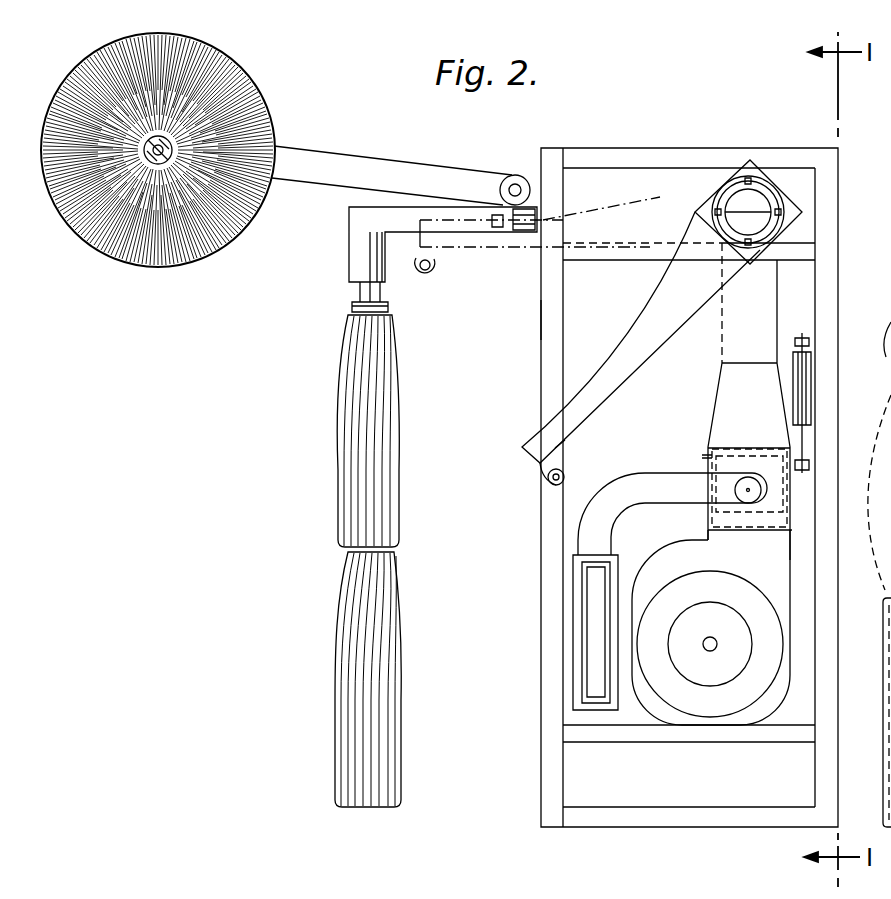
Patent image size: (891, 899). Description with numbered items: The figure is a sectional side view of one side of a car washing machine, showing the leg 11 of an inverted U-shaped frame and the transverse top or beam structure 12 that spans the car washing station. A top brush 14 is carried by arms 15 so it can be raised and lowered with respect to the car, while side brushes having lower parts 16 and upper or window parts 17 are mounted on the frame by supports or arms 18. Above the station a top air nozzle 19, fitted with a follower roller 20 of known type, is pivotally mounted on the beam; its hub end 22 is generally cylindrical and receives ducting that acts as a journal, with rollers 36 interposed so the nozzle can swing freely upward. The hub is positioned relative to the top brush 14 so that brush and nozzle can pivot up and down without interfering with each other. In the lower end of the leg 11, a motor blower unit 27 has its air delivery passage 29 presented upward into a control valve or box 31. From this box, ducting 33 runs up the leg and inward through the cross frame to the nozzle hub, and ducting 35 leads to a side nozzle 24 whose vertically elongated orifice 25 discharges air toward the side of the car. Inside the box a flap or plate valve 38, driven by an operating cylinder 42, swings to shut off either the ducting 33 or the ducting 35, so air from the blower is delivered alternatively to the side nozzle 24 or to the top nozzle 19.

The leg 11 is at (536, 318).
The transverse top or beam structure 12 is at (655, 146).
The top brush 14 is at (240, 100).
The arms 15 is at (328, 160).
The lower parts of side brushes 16 is at (352, 655).
The upper or window parts of side brushes 17 is at (350, 405).
The supports or arms 18 is at (372, 218).
The top air nozzle 19 is at (636, 357).
The follower roller 20 is at (546, 480).
The hub end of the nozzle 22 is at (693, 231).
The side nozzle 24 is at (573, 590).
The vertically elongated orifice 25 is at (595, 625).
The motor blower unit 27 is at (678, 695).
The air delivery passage 29 is at (772, 540).
The control valve or box 31 is at (727, 467).
The ducting 33 is at (772, 200).
The ducting 35 is at (624, 490).
The rollers 36 is at (748, 180).
The flap or plate valve 38 is at (716, 516).
The operating cylinder 42 is at (808, 404).